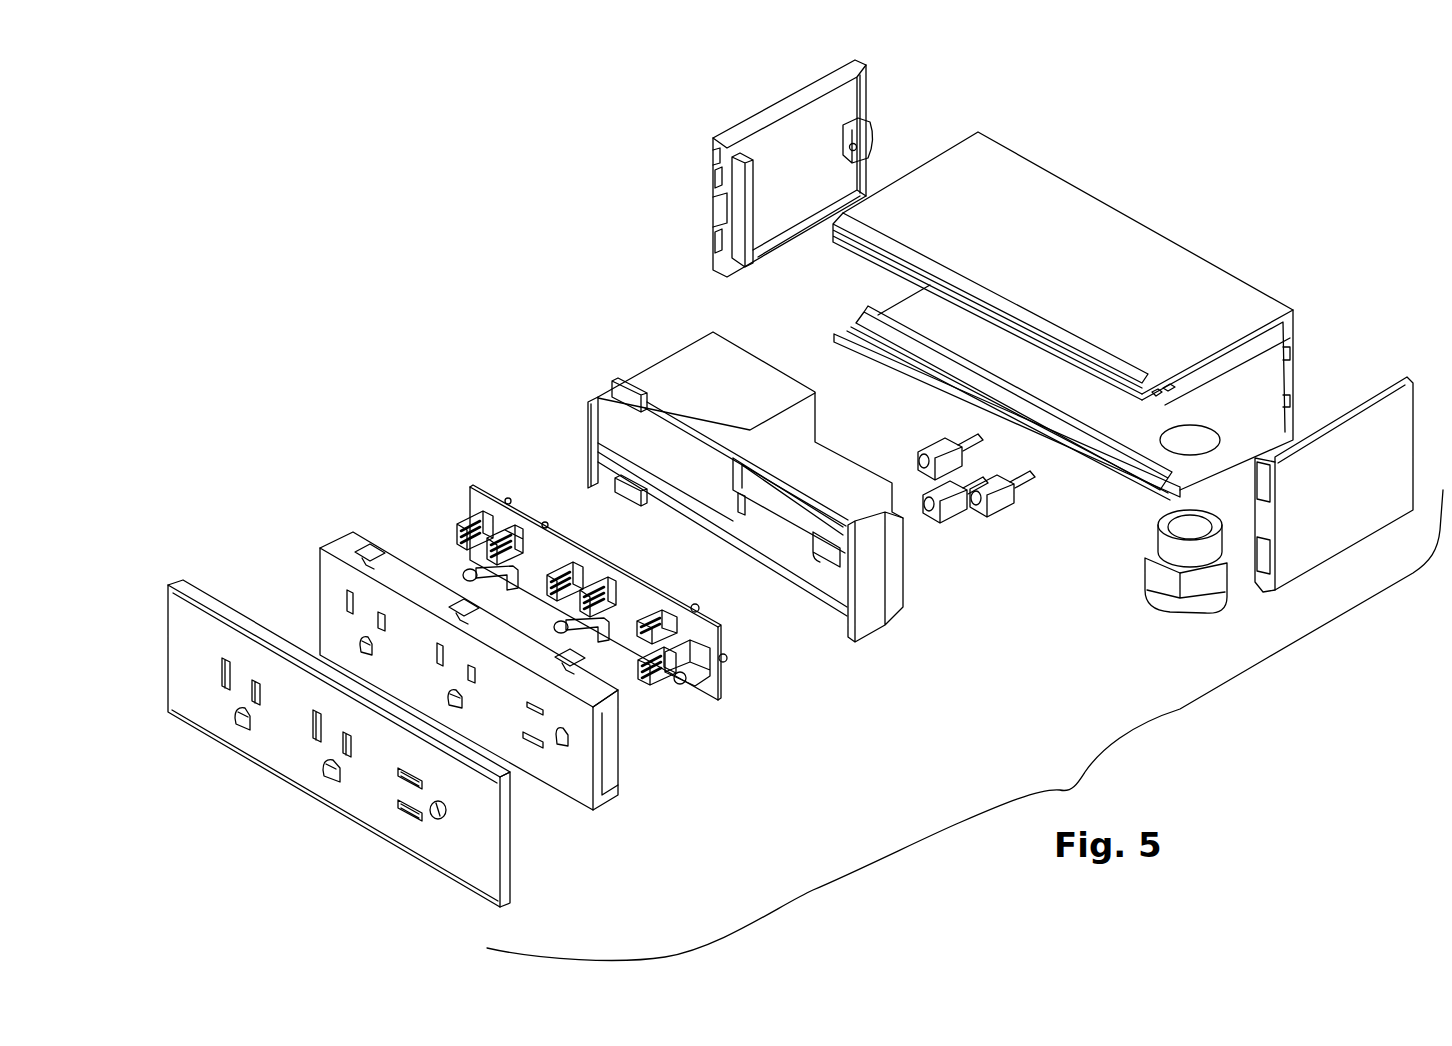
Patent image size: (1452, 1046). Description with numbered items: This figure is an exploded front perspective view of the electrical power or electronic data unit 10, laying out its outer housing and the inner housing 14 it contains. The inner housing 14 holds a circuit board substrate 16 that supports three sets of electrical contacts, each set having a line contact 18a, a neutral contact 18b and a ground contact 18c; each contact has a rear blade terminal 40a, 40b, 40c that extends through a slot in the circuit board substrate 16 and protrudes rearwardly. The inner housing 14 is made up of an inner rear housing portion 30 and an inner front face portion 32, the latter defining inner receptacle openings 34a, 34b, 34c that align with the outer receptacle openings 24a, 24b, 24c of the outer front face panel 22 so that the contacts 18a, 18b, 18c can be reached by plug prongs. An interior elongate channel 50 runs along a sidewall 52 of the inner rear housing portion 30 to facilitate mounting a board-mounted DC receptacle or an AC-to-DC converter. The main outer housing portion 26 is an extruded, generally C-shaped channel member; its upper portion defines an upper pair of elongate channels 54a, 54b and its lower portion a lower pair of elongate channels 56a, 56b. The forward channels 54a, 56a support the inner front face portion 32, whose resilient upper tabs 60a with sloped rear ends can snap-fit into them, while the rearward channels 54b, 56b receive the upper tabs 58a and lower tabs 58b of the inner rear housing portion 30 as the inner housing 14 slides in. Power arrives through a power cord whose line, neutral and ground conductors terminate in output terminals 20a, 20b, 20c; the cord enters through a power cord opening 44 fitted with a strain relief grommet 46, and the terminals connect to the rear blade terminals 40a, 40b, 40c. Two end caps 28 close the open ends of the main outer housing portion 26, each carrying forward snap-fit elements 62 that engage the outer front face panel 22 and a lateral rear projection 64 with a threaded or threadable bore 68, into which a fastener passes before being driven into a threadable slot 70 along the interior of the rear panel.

The electrical power or electronic data unit 10 is at (330, 116).
The inner housing 14 is at (870, 664).
The circuit board substrate 16 is at (478, 487).
The line contact 18a is at (512, 530).
The neutral contact 18b is at (474, 518).
The ground contact 18c is at (558, 610).
The line output terminal 20a is at (930, 450).
The neutral output terminal 20b is at (945, 510).
The ground output terminal 20c is at (1005, 508).
The outer front face panel 22 is at (233, 592).
The outer receptacle opening 24a is at (266, 688).
The outer receptacle opening 24b is at (216, 677).
The outer receptacle opening 24c is at (234, 717).
The main outer housing portion 26 is at (1132, 220).
The end cap 28 is at (762, 106).
The inner rear housing portion 30 is at (650, 372).
The inner front face portion 32 is at (340, 540).
The inner receptacle opening 34a is at (386, 631).
The inner receptacle opening 34b is at (344, 598).
The inner receptacle opening 34c is at (358, 644).
The rear blade terminal 40a is at (546, 522).
The rear blade terminal 40b is at (508, 498).
The rear blade terminal 40c is at (730, 656).
The power cord opening 44 is at (1200, 438).
The strain relief grommet 46 is at (1175, 600).
The interior elongate channel 50 is at (635, 452).
The sidewall 52 is at (582, 400).
The forward upper elongate channel 54a is at (1155, 398).
The rearward upper elongate channel 54b is at (1168, 396).
The forward lower elongate channel 56a is at (848, 320).
The rearward lower elongate channel 56b is at (860, 314).
The upper tab 58a is at (645, 390).
The lower tab 58b is at (648, 503).
The upper tab 60a is at (384, 556).
The forward snap-fit element 62 is at (710, 180).
The lateral rear projection 64 is at (868, 132).
The threaded or threadable bore 68 is at (846, 148).
The threadable slot 70 is at (1240, 372).